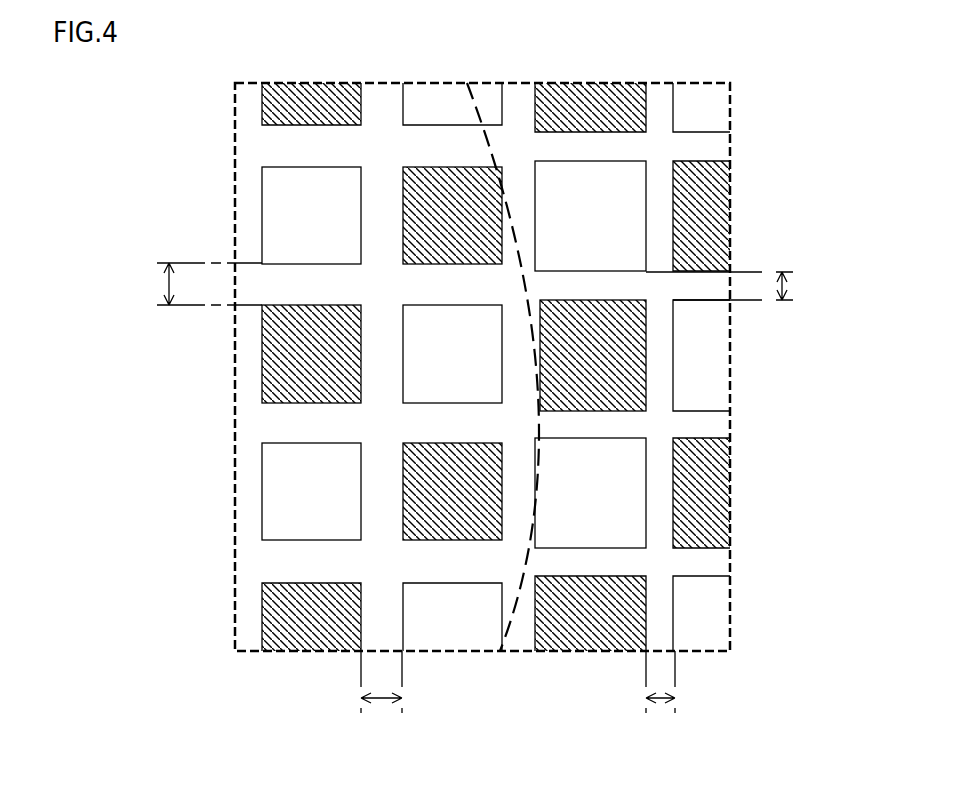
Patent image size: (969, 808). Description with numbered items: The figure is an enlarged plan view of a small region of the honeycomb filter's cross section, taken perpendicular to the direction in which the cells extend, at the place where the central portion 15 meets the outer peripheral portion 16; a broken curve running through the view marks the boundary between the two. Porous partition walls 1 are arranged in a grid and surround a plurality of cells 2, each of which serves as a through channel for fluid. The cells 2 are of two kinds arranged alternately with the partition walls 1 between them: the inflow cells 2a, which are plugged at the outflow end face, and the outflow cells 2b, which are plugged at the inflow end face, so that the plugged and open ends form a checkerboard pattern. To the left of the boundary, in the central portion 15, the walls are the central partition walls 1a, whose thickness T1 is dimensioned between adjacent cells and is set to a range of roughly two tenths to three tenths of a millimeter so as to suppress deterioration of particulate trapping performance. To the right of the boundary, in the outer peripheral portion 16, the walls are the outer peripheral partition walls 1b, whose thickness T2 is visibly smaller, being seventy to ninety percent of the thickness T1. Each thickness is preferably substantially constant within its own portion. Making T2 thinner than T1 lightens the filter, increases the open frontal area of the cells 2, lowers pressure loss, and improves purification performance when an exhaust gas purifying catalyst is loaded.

The partition walls 1 is at (498, 327).
The central partition walls 1a is at (358, 327).
The outer peripheral partition walls 1b is at (647, 288).
The cells 2 is at (426, 133).
The inflow cells 2a is at (328, 213).
The outflow cells 2b is at (443, 205).
The central portion 15 is at (336, 417).
The outer peripheral portion 16 is at (653, 428).
The thickness of the partition walls in the central portion T1 is at (262, 503).
The thickness of the partition walls in the outer peripheral portion T2 is at (739, 508).